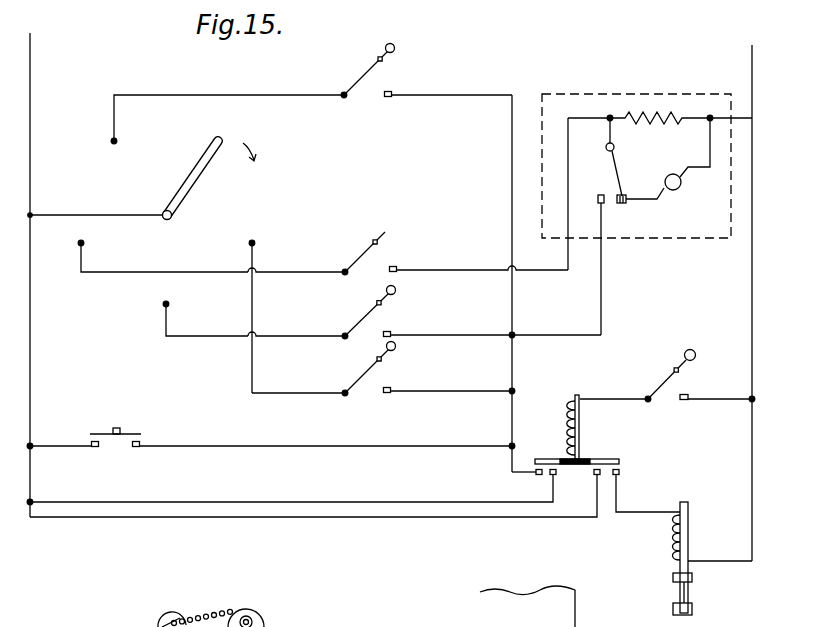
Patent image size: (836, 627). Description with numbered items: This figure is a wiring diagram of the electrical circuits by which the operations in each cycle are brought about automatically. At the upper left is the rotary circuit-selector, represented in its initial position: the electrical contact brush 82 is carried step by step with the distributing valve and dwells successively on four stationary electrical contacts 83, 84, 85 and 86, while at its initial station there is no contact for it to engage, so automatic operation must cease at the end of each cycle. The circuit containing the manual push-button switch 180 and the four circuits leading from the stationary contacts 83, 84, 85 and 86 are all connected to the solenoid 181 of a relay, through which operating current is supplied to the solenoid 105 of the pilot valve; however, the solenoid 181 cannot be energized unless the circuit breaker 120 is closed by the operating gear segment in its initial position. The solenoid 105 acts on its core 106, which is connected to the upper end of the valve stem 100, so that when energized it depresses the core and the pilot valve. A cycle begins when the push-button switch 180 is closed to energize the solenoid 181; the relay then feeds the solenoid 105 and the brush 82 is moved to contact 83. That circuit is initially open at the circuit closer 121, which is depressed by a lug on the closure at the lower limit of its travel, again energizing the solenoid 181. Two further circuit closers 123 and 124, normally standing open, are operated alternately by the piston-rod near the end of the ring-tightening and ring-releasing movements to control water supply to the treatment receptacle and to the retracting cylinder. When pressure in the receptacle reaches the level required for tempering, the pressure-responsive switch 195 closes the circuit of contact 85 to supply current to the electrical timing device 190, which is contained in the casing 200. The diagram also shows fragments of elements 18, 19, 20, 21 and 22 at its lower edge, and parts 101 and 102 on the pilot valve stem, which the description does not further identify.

The gear 18 is at (147, 619).
The sprocket 19 is at (186, 619).
The chain 20 is at (214, 608).
The gear 21 is at (262, 616).
The shaft 22 is at (262, 623).
The electrical contact brush 82 is at (203, 160).
The stationary electrical contact 83 is at (254, 241).
The stationary electrical contact 84 is at (164, 307).
The stationary electrical contact 85 is at (84, 243).
The stationary electrical contact 86 is at (111, 140).
The valve stem 100 is at (680, 593).
The collar 101 is at (693, 578).
The plunger head 102 is at (693, 610).
The solenoid 105 is at (692, 545).
The core 106 is at (690, 504).
The circuit breaker 120 is at (688, 349).
The circuit closer 121 is at (396, 348).
The electrical circuit closer 123 is at (396, 292).
The electrical circuit closer 124 is at (394, 52).
The push-button switch 180 is at (117, 427).
The solenoid of a relay 181 is at (570, 421).
The electrical timing device 190 is at (678, 154).
The pressure-responsive switch 195 is at (383, 234).
The casing 200 is at (586, 94).